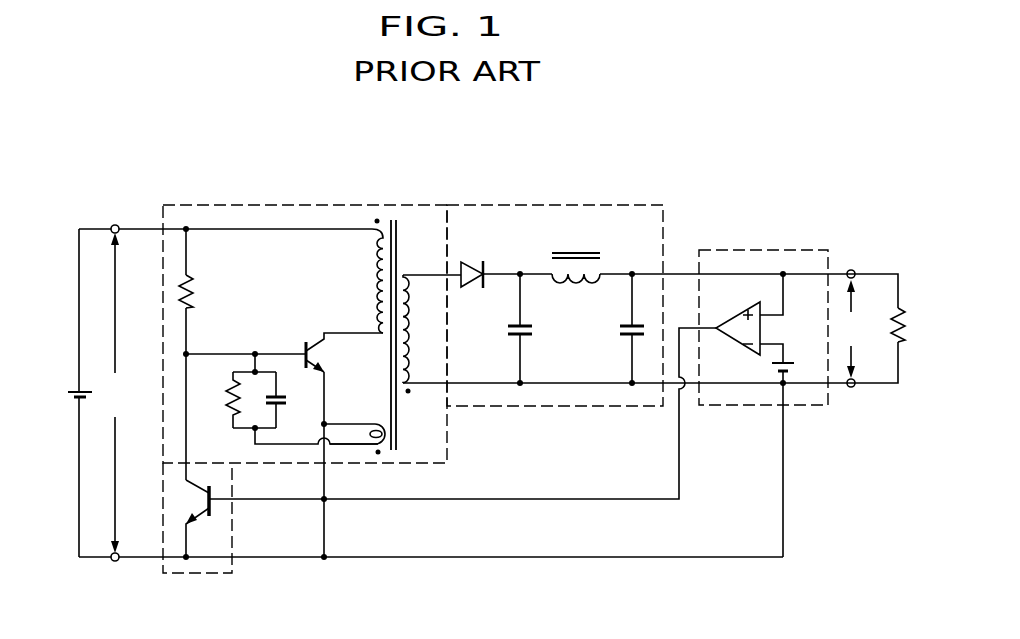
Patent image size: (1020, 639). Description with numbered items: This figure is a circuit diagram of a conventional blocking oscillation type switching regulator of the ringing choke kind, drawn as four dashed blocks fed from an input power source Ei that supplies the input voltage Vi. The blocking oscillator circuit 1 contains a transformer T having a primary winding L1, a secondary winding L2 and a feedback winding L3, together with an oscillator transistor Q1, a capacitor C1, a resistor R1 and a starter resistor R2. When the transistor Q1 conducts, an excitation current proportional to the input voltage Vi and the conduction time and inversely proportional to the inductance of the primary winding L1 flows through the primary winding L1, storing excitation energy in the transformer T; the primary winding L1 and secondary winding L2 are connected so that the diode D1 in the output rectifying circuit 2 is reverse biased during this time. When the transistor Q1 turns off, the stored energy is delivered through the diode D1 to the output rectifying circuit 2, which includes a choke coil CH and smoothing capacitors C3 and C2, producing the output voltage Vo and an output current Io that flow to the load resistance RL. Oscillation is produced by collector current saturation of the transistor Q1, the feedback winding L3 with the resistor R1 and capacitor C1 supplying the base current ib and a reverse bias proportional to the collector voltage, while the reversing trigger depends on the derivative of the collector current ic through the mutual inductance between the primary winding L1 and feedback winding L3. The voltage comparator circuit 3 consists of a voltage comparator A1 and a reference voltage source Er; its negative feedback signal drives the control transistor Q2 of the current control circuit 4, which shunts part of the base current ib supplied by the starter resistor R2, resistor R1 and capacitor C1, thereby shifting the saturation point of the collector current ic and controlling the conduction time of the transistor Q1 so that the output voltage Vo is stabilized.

The blocking oscillator circuit 1 is at (340, 205).
The output rectifying circuit 2 is at (560, 205).
The voltage comparator circuit 3 is at (745, 250).
The current control circuit 4 is at (232, 573).
The transformer T is at (398, 232).
The primary winding L1 is at (360, 281).
The secondary winding L2 is at (422, 329).
The feedback winding L3 is at (354, 420).
The oscillator transistor Q1 is at (308, 340).
The control transistor Q2 is at (210, 520).
The resistor R1 is at (285, 399).
The starter resistor R2 is at (203, 292).
The capacitor C1 is at (291, 400).
The diode D1 is at (470, 255).
The choke coil CH is at (576, 252).
The smoothing capacitor C2 is at (618, 328).
The smoothing capacitor C3 is at (537, 328).
The voltage comparator A1 is at (738, 326).
The reference voltage source Er is at (796, 366).
The load resistance RL is at (913, 325).
The input power source Ei is at (72, 399).
The input power source voltage Vi is at (116, 393).
The output voltage Vo is at (852, 329).
The output current Io is at (884, 262).
The base current ib is at (280, 343).
The collector current ic is at (372, 343).